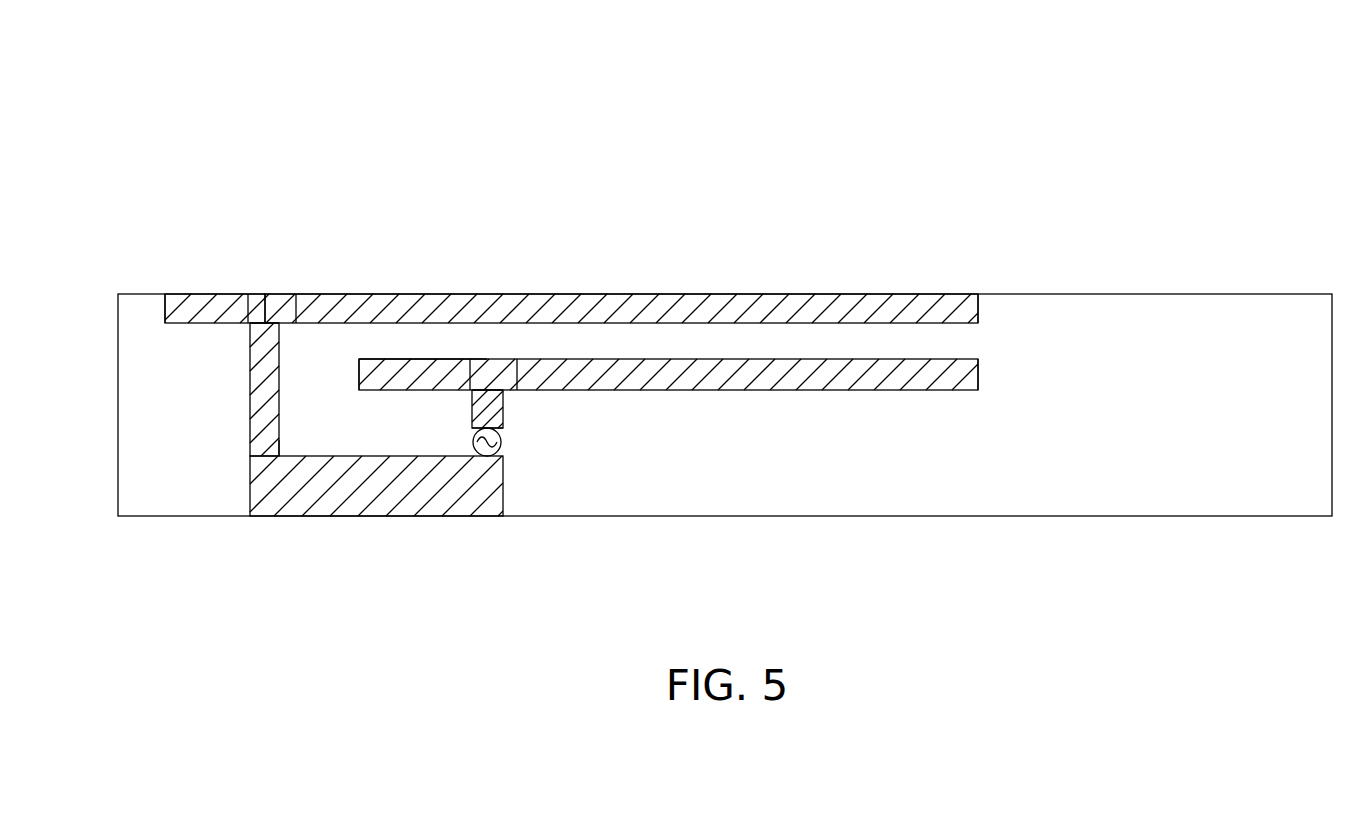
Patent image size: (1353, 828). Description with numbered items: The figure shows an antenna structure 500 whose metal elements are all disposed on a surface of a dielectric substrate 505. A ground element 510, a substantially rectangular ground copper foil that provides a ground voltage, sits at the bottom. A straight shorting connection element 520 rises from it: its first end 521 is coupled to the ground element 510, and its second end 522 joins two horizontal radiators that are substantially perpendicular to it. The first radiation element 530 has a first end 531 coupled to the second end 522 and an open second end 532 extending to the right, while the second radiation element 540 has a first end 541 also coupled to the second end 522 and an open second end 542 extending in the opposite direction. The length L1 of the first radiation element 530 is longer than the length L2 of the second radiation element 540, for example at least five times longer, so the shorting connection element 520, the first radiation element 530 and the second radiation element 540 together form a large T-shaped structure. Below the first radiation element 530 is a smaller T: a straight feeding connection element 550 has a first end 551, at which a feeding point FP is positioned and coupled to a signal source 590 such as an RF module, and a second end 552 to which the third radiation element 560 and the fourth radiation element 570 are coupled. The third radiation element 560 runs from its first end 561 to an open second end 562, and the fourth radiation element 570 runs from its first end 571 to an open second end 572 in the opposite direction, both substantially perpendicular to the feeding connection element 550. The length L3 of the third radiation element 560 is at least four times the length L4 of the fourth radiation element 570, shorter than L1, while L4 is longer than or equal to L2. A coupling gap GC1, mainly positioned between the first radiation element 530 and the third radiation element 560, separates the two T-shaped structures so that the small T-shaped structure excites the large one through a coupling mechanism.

The antenna structure 500 is at (70, 71).
The dielectric substrate 505 is at (1278, 294).
The ground element 510 is at (372, 498).
The shorting connection element 520 is at (262, 383).
The first end of shorting connection element 521 is at (276, 440).
The second end of shorting connection element 522 is at (254, 345).
The first radiation element 530 is at (628, 310).
The first end of first radiation element 531 is at (296, 292).
The second end of first radiation element 532 is at (968, 311).
The second radiation element 540 is at (212, 293).
The first end of second radiation element 541 is at (248, 292).
The second end of second radiation element 542 is at (165, 307).
The feeding connection element 550 is at (503, 410).
The first end of feeding connection element 551 is at (503, 428).
The second end of feeding connection element 552 is at (503, 396).
The third radiation element 560 is at (738, 372).
The first end of third radiation element 561 is at (517, 360).
The second end of third radiation element 562 is at (925, 368).
The fourth radiation element 570 is at (418, 362).
The first end of fourth radiation element 571 is at (470, 360).
The second end of fourth radiation element 572 is at (358, 375).
The signal source 590 is at (501, 447).
The feeding point FP is at (476, 417).
The length of first radiation element L1 is at (978, 294).
The length of second radiation element L2 is at (265, 323).
The length of third radiation element L3 is at (487, 218).
The length of fourth radiation element L4 is at (487, 390).
The coupling gap GC1 is at (978, 323).